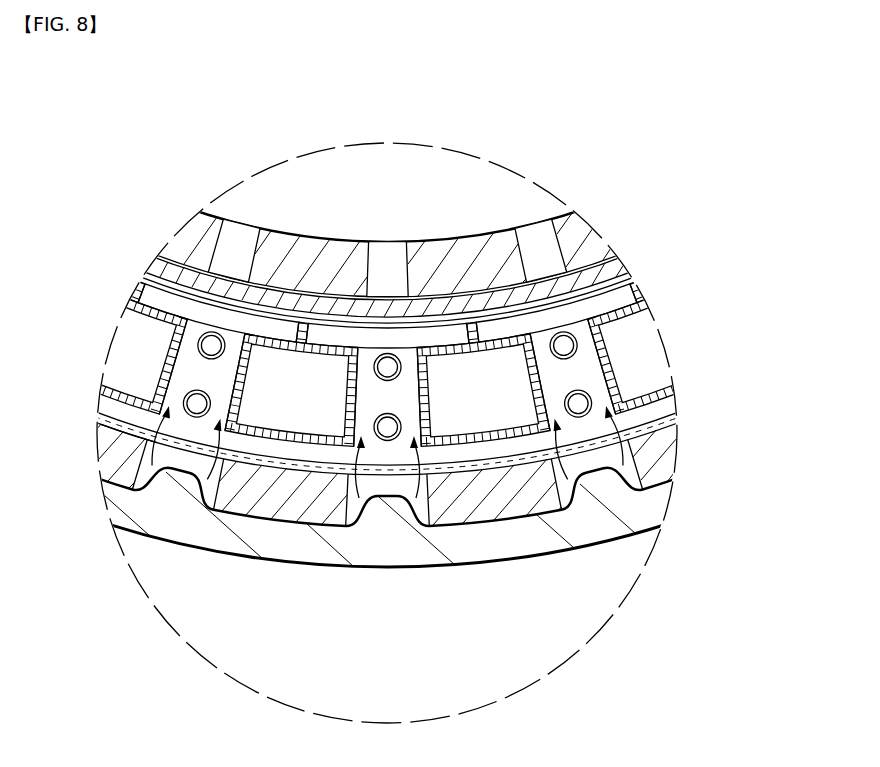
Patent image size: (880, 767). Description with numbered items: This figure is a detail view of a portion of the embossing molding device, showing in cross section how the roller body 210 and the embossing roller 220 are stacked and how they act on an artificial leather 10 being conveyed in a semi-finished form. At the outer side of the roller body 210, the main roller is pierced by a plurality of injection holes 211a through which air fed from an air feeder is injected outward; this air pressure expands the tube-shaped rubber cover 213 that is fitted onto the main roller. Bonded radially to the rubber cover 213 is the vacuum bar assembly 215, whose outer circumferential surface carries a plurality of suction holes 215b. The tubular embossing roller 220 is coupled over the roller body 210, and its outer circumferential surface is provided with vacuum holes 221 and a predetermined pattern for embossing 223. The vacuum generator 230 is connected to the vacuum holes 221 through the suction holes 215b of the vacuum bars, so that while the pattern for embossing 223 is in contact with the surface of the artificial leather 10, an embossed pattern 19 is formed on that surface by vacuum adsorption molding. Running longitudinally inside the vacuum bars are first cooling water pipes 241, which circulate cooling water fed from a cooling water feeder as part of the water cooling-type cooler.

The artificial leather 10 is at (400, 566).
The embossed pattern 19 is at (138, 472).
The roller body 210 is at (273, 222).
The injection holes 211a is at (537, 233).
The rubber cover 213 is at (180, 265).
The vacuum bar assembly 215 is at (622, 358).
The suction holes 215b is at (216, 440).
The embossing roller 220 is at (676, 444).
The vacuum holes 221 is at (628, 452).
The pattern for embossing 223 is at (537, 522).
The vacuum generator 230 is at (606, 394).
The first cooling water pipes 241 is at (402, 430).